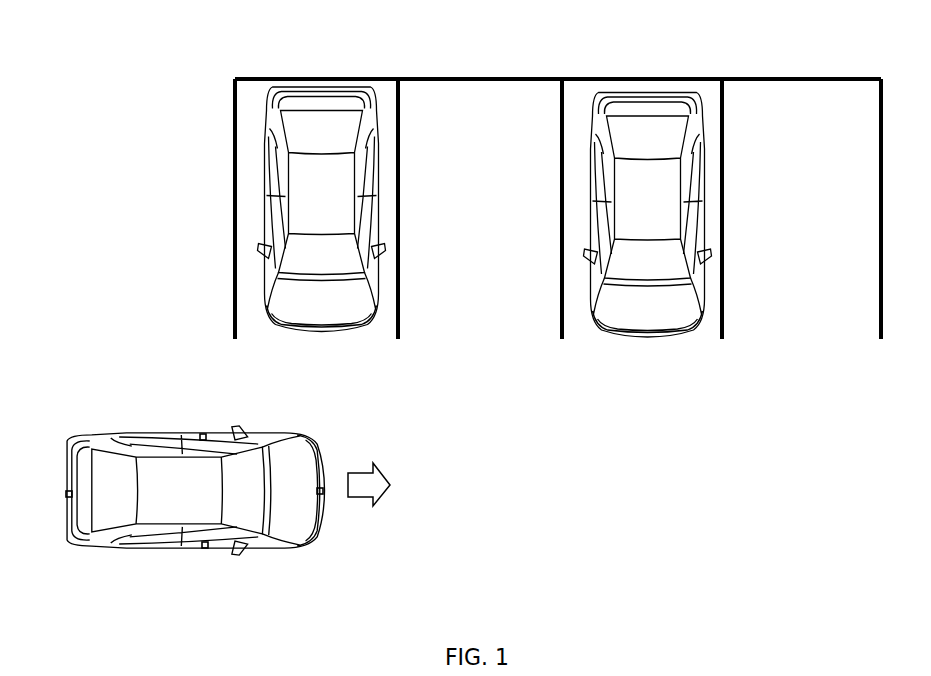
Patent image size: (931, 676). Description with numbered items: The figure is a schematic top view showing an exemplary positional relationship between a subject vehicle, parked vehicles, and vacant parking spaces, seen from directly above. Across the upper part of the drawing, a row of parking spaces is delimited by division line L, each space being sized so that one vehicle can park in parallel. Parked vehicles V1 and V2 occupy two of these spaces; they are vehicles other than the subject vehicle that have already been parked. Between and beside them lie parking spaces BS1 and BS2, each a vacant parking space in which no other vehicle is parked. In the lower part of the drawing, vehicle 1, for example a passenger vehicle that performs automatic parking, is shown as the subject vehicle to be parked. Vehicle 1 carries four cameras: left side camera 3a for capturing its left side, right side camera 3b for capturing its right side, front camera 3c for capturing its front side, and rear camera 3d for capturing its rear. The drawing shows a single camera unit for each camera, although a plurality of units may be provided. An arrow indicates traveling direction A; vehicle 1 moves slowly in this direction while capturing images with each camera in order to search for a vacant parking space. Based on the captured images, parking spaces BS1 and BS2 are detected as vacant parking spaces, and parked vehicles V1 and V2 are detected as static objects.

The division line L is at (563, 78).
The parked vehicle V1 is at (327, 335).
The parked vehicle V2 is at (665, 338).
The parking space BS1 is at (482, 292).
The parking space BS2 is at (805, 303).
The vehicle 1 is at (285, 551).
The left side camera 3a is at (203, 434).
The right side camera 3b is at (206, 549).
The front camera 3c is at (323, 487).
The rear camera 3d is at (67, 493).
The traveling direction A is at (369, 484).